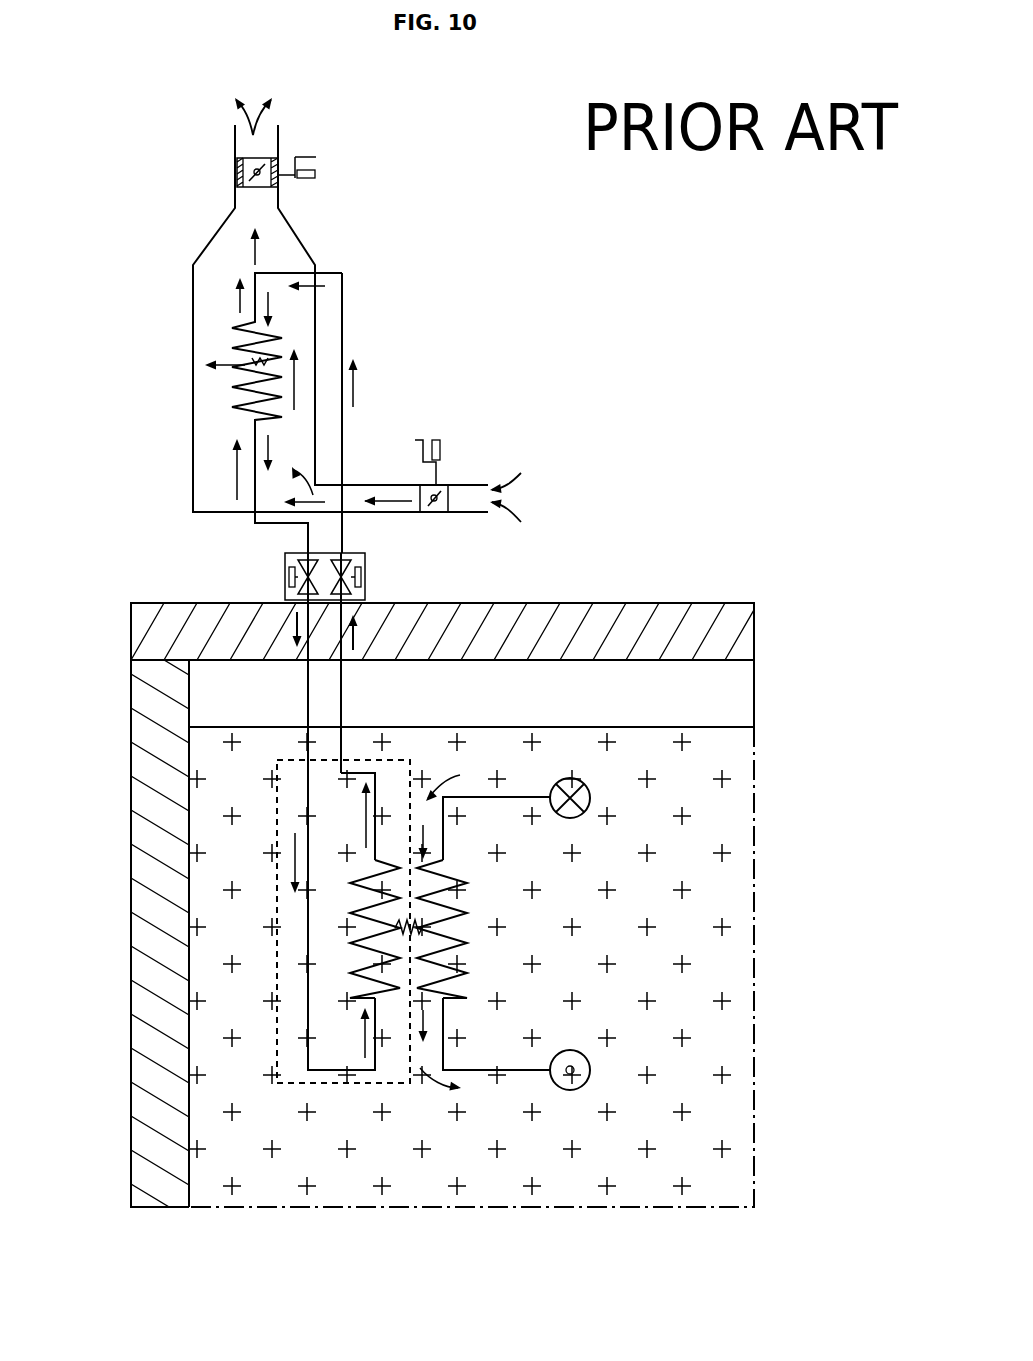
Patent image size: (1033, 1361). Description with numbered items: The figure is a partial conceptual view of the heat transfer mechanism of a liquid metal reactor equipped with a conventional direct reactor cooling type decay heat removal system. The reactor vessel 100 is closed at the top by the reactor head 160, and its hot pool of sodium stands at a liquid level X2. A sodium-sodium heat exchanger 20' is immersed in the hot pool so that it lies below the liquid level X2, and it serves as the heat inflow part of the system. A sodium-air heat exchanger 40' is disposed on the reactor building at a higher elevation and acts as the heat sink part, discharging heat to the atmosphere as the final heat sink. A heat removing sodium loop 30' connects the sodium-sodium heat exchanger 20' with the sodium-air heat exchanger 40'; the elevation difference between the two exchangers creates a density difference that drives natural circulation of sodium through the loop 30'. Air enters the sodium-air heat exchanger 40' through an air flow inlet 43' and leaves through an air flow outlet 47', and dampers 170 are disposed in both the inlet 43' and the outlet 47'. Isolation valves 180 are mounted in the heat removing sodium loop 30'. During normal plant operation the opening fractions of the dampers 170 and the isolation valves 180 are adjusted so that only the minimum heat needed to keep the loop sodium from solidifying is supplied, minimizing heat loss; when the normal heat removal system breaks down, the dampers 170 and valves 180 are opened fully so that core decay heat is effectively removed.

The air flow outlet 47' is at (295, 100).
The dampers 170 is at (278, 160).
The sodium-air heat exchanger 40' is at (340, 339).
The air flow inlet 43' is at (497, 455).
The heat removing sodium loop 30' is at (200, 511).
The isolation valves 180 is at (281, 580).
The reactor head 160 is at (653, 628).
The reactor vessel 100 is at (127, 756).
The sodium-sodium heat exchanger 20' is at (230, 921).
The liquid level X2 is at (757, 727).